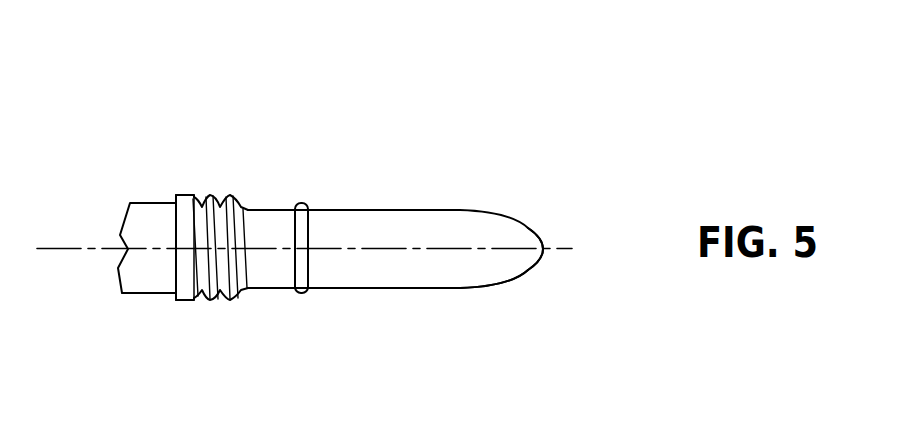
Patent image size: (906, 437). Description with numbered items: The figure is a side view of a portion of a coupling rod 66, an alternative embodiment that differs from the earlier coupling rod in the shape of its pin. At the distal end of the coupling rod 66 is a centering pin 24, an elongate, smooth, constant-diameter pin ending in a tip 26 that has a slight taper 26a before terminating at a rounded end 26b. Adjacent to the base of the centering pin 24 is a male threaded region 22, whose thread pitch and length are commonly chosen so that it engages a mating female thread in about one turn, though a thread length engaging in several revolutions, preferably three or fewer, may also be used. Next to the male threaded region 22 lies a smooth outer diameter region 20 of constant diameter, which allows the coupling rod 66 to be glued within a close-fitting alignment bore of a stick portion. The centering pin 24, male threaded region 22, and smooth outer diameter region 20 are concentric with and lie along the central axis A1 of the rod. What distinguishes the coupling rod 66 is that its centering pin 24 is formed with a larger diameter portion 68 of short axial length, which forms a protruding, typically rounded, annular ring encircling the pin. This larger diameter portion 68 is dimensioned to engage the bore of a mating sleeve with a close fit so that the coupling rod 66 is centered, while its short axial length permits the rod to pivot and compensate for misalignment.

The smooth outer diameter region 20 is at (140, 202).
The male threaded region 22 is at (208, 200).
The centering pin 24 is at (395, 210).
The tip 26 is at (540, 230).
The taper 26a is at (490, 287).
The rounded end 26b is at (538, 267).
The coupling rod 66 is at (410, 103).
The larger diameter portion 68 is at (302, 293).
The central axis A1 is at (380, 249).